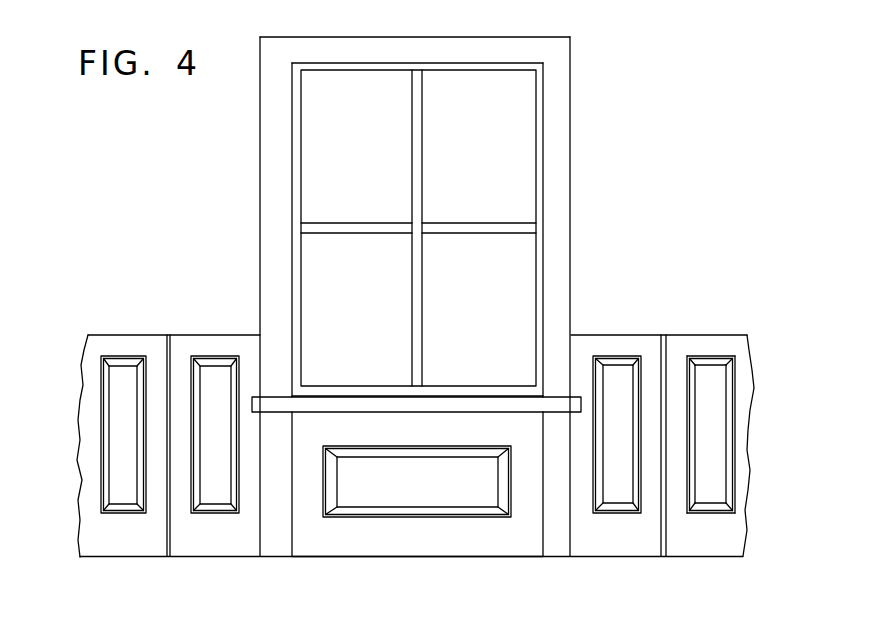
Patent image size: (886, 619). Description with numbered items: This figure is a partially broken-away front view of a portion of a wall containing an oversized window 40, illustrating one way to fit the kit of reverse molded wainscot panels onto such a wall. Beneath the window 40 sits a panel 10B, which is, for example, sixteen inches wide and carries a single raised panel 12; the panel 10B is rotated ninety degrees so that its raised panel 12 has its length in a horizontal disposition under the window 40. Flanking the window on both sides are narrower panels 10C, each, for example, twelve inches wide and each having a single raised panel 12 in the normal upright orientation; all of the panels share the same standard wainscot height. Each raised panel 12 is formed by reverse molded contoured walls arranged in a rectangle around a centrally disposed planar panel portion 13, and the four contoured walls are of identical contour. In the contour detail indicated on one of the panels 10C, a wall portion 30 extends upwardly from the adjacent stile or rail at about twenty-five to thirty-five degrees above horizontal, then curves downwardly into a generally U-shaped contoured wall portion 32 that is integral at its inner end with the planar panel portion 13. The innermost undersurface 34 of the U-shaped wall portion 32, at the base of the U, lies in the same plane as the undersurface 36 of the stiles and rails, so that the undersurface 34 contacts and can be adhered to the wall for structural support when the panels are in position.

The panel 10B is at (312, 537).
The panel 10C is at (443, 434).
The raised panel 12 is at (270, 475).
The planar panel portion 13 is at (128, 435).
The wall portion 30 is at (739, 442).
The U-shaped contoured wall portion 32 is at (708, 507).
The innermost undersurface 34 is at (692, 457).
The undersurface 36 is at (717, 362).
The window 40 is at (513, 170).